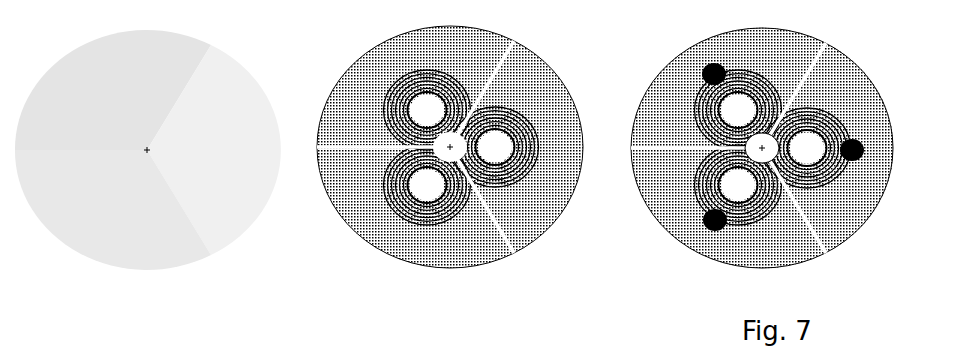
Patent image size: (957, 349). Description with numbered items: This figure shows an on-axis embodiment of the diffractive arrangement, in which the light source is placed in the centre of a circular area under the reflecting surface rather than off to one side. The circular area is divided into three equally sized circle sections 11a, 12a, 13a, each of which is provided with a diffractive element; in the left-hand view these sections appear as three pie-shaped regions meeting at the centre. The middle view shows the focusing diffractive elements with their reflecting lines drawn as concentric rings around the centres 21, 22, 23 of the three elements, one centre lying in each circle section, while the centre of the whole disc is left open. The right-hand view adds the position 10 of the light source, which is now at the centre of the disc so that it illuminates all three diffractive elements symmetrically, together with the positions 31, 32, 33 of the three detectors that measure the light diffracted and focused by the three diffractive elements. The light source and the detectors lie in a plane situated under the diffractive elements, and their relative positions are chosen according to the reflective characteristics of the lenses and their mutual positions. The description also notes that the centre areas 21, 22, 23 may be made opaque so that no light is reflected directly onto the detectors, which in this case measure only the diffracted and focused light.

The circle section 11a is at (113, 90).
The circle section 12a is at (218, 150).
The circle section 13a is at (113, 211).
The centre of focusing diffractive element 21 is at (415, 86).
The centre of focusing diffractive element 22 is at (517, 147).
The centre of focusing diffractive element 23 is at (415, 214).
The position of light source 10 is at (752, 138).
The position of detector 31 is at (741, 204).
The position of detector 32 is at (831, 148).
The position of detector 33 is at (728, 210).